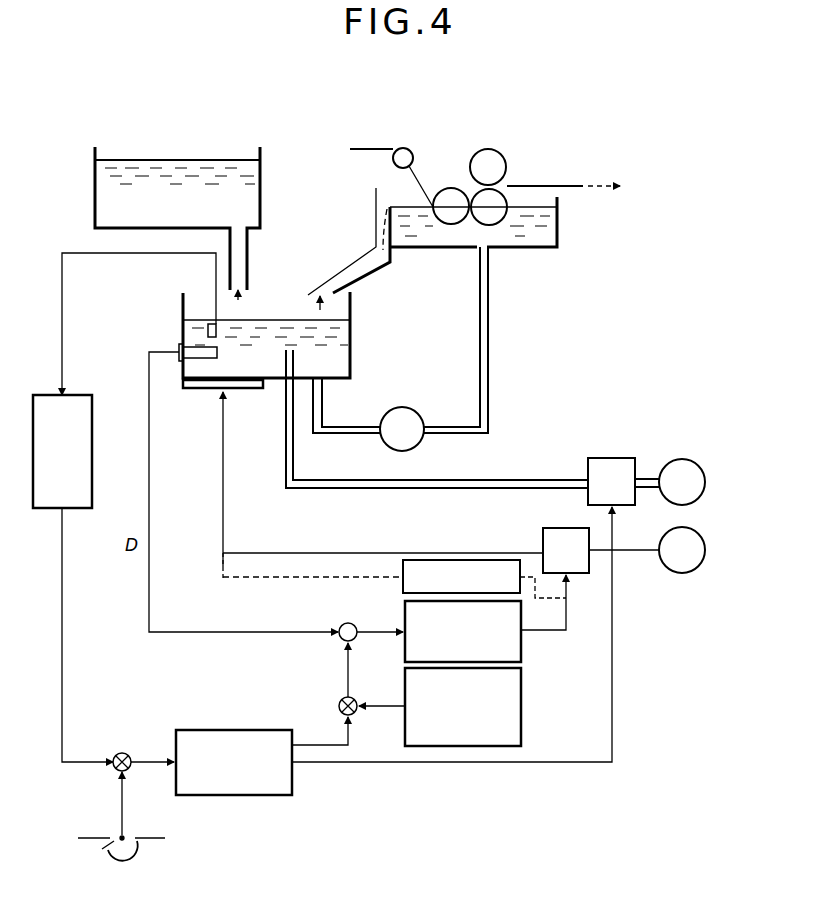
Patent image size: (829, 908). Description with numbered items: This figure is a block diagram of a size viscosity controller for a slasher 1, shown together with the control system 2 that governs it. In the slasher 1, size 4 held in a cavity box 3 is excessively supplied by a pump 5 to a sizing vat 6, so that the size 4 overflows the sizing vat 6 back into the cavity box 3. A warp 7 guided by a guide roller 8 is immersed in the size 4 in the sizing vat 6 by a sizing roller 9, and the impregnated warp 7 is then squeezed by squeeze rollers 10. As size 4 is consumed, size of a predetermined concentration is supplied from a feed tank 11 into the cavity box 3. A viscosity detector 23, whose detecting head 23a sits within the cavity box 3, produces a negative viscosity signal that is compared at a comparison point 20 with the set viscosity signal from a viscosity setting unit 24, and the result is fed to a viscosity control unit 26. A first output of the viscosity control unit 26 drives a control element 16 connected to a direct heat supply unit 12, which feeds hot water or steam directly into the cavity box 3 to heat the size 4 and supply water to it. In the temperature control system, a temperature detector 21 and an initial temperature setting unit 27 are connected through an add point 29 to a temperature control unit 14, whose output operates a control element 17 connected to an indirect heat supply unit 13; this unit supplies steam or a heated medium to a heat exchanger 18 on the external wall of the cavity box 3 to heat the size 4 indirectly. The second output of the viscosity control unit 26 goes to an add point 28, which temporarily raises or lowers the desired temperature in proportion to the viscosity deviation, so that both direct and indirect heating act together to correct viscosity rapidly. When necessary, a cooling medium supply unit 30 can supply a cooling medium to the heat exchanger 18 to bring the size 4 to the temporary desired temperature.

The slasher 1 is at (566, 308).
The control system 2 is at (565, 396).
The cavity box 3 is at (352, 345).
The size 4 is at (175, 160).
The pump 5 is at (381, 440).
The sizing vat 6 is at (438, 250).
The warp 7 is at (372, 147).
The guide roller 8 is at (410, 150).
The sizing roller 9 is at (456, 193).
The squeeze rollers 10 is at (497, 155).
The feed tank 11 is at (260, 193).
The direct heat supply unit 12 is at (705, 477).
The indirect heat supply unit 13 is at (705, 550).
The temperature control unit 14 is at (521, 651).
The control element 16 is at (587, 468).
The control element 17 is at (542, 535).
The heat exchanger 18 is at (247, 390).
The comparison point 20 is at (122, 753).
The temperature detector 21 is at (184, 347).
The viscosity detector 23 is at (85, 384).
The detecting head 23a is at (210, 321).
The viscosity setting unit 24 is at (134, 850).
The viscosity control unit 26 is at (228, 730).
The initial temperature setting unit 27 is at (521, 706).
The add point 28 is at (338, 706).
The add point 29 is at (356, 641).
The cooling medium supply unit 30 is at (403, 586).